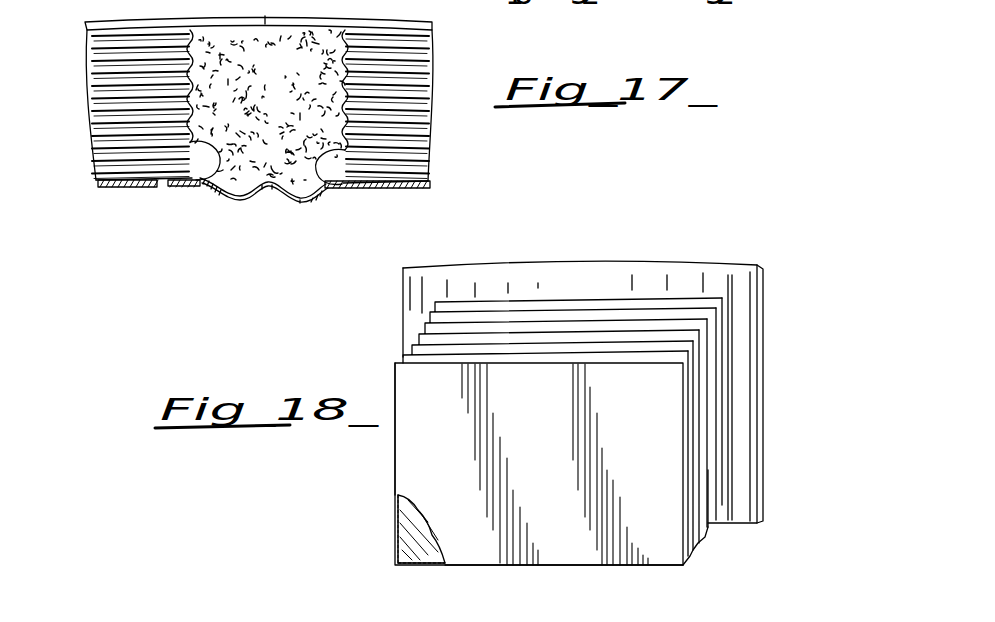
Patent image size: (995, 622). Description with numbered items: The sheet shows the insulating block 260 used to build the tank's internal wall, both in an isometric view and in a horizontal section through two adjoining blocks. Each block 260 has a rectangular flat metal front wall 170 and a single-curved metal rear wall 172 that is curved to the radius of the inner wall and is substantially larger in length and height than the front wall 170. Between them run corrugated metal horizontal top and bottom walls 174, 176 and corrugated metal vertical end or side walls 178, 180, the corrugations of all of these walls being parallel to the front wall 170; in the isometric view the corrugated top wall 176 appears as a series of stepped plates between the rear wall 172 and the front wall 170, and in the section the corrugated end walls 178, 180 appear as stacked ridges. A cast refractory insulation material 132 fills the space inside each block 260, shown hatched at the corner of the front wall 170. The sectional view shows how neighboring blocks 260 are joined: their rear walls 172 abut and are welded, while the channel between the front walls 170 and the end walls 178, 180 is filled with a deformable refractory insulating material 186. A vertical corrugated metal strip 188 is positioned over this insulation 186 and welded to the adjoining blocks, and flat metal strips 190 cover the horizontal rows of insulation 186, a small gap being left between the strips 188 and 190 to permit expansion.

In FIG. 18, the cast refractory insulation material 132 is at (404, 535).
In FIG. 18, the front wall 170 is at (663, 533).
In FIG. 17, the rear wall 172 is at (115, 22).
In FIG. 18, the rear wall 172 is at (740, 402).
In FIG. 18, the bottom wall 174 is at (472, 568).
In FIG. 17, the top wall 176 is at (111, 73).
In FIG. 18, the top wall 176 is at (697, 327).
In FIG. 17, the end wall 178 is at (322, 186).
In FIG. 18, the end wall 178 is at (393, 473).
In FIG. 17, the end wall 180 is at (213, 176).
In FIG. 18, the end wall 180 is at (712, 468).
In FIG. 17, the deformable refractory insulating material 186 is at (245, 166).
In FIG. 17, the vertical corrugated metal strips 188 is at (288, 201).
In FIG. 17, the flat metal strips 190 is at (120, 187).
In FIG. 18, the insulating block 260 is at (786, 266).